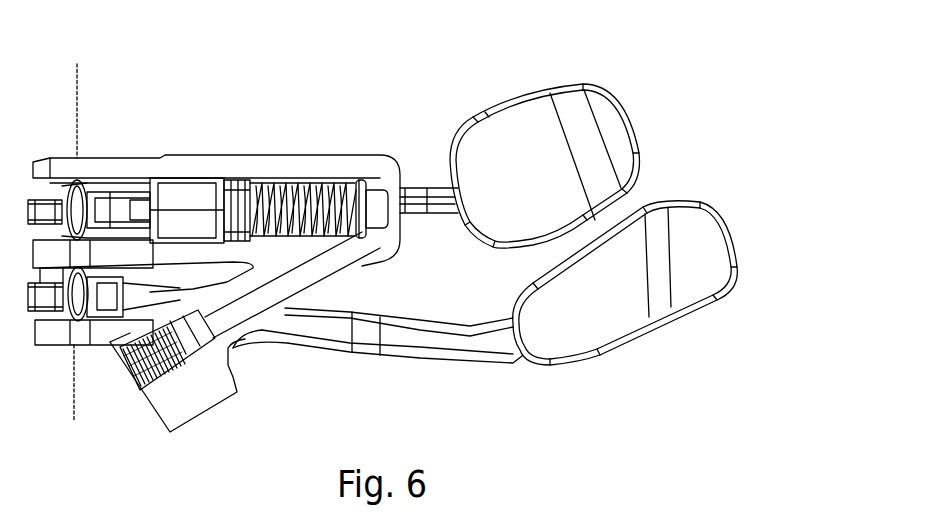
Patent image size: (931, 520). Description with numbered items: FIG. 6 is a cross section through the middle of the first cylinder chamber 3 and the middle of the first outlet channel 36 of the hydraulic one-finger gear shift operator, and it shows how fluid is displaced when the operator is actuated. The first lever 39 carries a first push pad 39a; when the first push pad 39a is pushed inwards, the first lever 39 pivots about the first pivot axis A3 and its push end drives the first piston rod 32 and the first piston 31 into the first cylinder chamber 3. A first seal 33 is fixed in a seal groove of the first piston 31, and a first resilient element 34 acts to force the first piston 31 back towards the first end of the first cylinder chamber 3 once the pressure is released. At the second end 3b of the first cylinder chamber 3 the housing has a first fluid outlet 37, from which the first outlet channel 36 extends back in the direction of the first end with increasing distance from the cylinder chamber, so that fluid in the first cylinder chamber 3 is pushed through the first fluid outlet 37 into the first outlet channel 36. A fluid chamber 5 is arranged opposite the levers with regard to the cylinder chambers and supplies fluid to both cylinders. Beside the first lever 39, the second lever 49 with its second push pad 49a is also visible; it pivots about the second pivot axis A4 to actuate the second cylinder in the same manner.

The first cylinder chamber 3 is at (340, 178).
The second end of the first cylinder chamber 3b is at (382, 190).
The fluid chamber 5 is at (163, 178).
The first piston 31 is at (200, 173).
The first piston rod 32 is at (107, 207).
The first seal 33 is at (237, 177).
The first resilient element 34 is at (290, 197).
The first outlet channel 36 is at (227, 322).
The first fluid outlet 37 is at (365, 243).
The first lever 39 is at (615, 123).
The first push pad 39a is at (585, 155).
The second lever 49 is at (710, 235).
The second push pad 49a is at (658, 262).
The first pivot axis A3 is at (78, 98).
The second pivot axis A4 is at (76, 396).